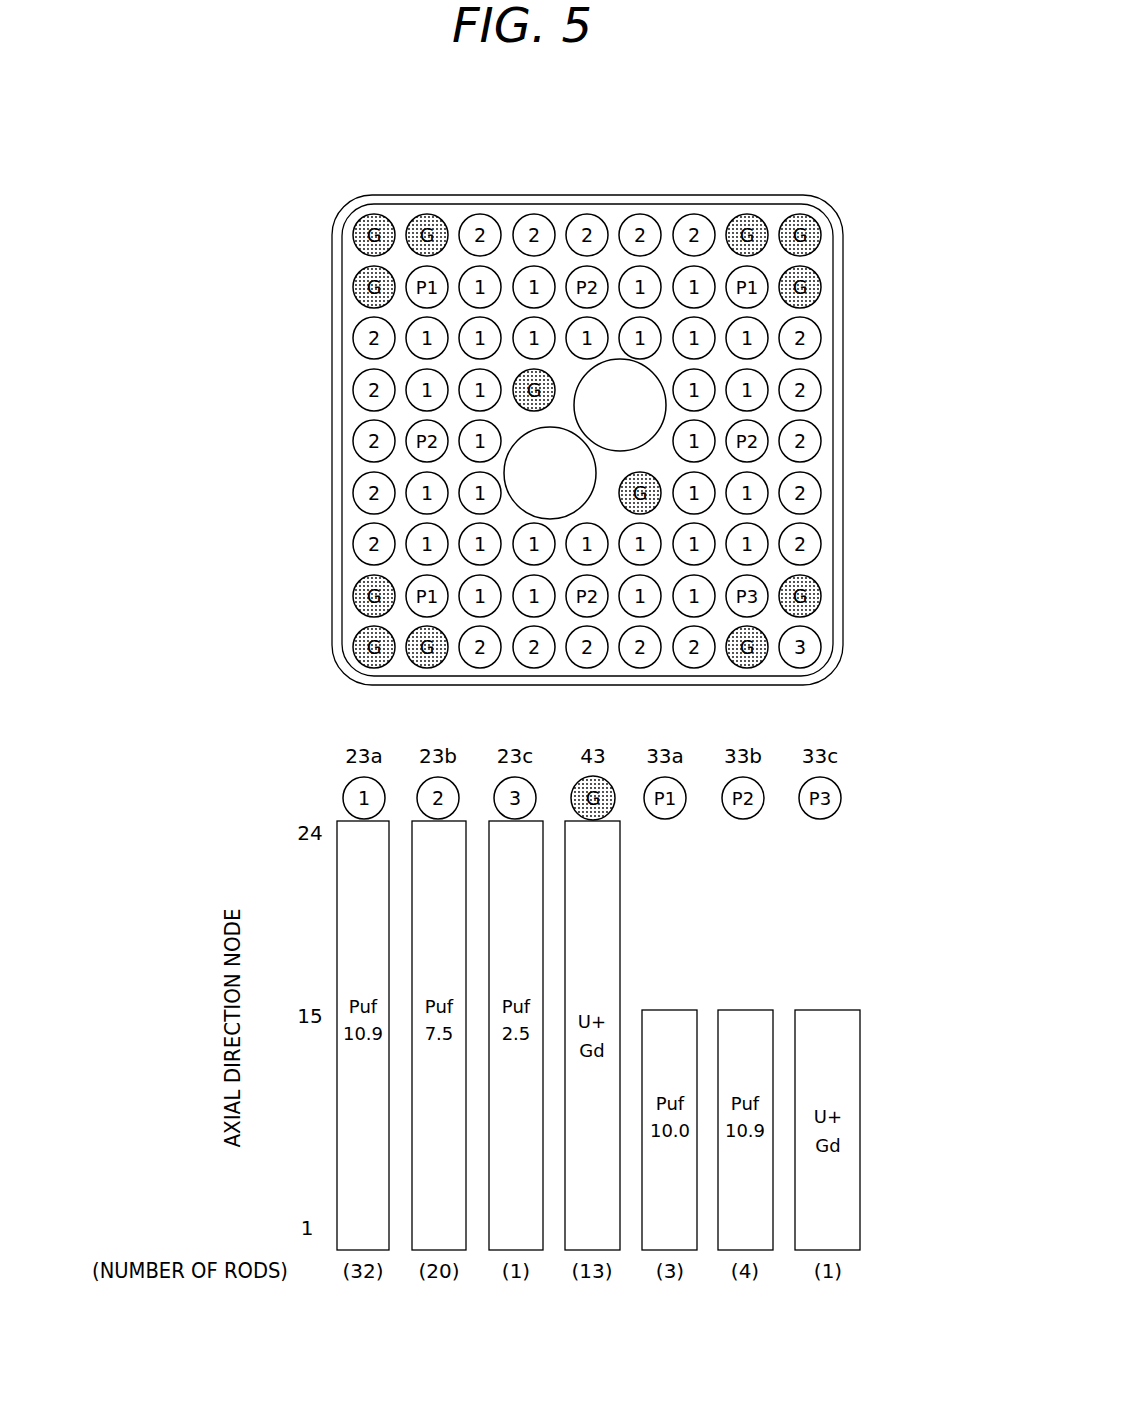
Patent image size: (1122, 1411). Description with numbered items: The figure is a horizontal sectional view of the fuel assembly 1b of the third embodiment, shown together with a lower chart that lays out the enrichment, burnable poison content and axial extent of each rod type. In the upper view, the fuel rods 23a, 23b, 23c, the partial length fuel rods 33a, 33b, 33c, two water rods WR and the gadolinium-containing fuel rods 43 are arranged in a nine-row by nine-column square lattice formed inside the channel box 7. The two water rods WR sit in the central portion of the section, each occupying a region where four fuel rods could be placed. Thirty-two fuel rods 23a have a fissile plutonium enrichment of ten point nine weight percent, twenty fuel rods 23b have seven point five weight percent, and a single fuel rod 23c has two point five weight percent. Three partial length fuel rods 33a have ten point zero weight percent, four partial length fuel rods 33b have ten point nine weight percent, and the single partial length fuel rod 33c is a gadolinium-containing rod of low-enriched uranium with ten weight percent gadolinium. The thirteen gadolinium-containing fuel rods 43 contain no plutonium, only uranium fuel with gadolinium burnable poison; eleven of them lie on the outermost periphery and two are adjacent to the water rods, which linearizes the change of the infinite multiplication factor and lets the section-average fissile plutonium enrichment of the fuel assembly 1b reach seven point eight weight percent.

The fuel assembly 1b is at (497, 170).
The channel box 7 is at (843, 438).
The fuel rod 23a is at (655, 276).
The fuel rod 23b is at (822, 336).
The fuel rod 23c is at (820, 652).
The gadolinium-containing fuel rod 43 is at (823, 232).
The partial length fuel rod 33a is at (410, 612).
The partial length fuel rod 33b is at (413, 457).
The partial length fuel rod 33c is at (757, 578).